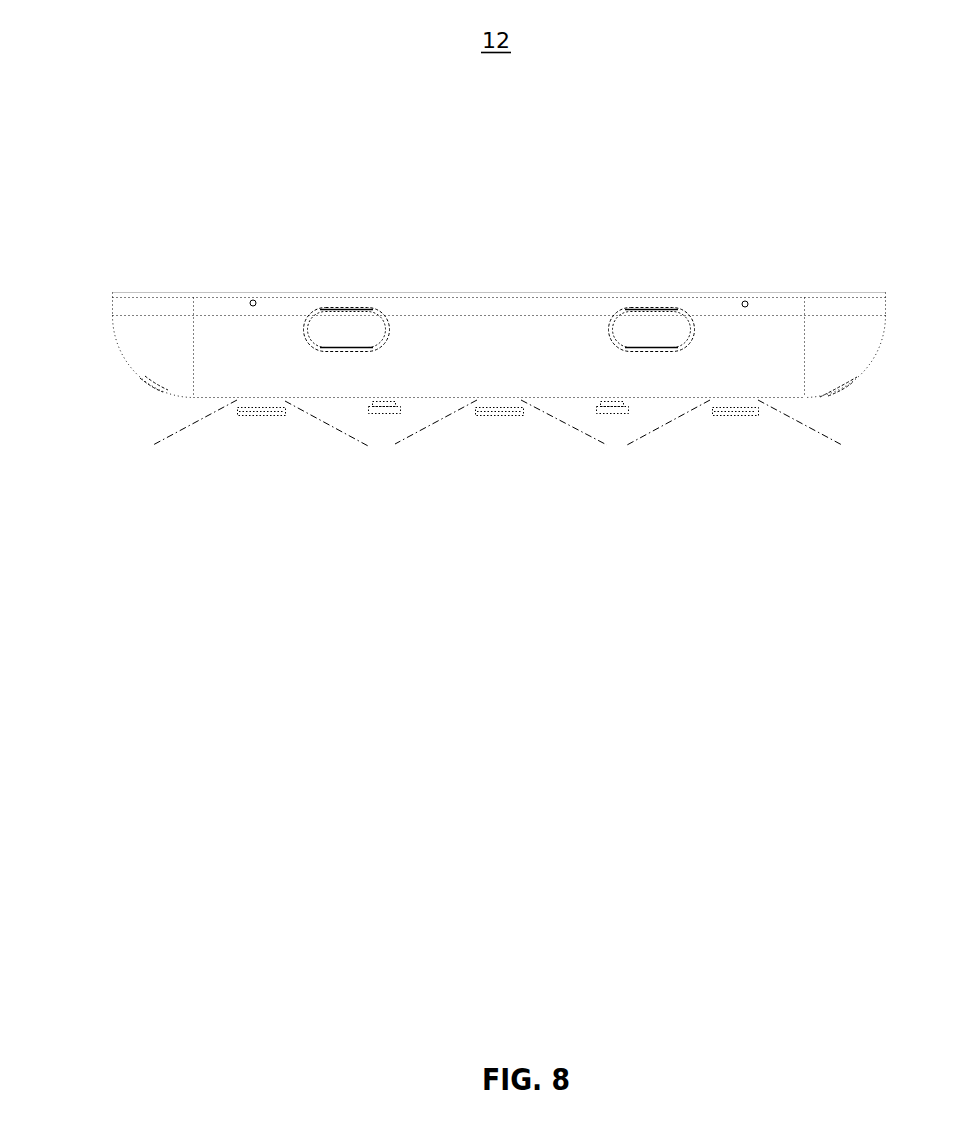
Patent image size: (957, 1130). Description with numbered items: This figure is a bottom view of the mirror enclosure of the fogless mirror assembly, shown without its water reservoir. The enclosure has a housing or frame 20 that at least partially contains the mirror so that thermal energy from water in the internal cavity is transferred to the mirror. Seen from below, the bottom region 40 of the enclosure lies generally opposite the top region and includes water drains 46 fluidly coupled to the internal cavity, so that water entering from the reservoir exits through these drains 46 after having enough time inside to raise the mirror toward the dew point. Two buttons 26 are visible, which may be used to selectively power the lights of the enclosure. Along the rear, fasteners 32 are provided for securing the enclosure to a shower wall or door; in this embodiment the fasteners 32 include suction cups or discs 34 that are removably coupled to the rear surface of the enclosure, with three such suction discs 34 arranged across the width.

The frame 20 is at (123, 358).
The button 26 is at (388, 333).
The fastener 32 is at (258, 477).
The suction cup/disc 34 is at (279, 442).
The bottom region 40 is at (151, 413).
The water drain 46 is at (255, 300).